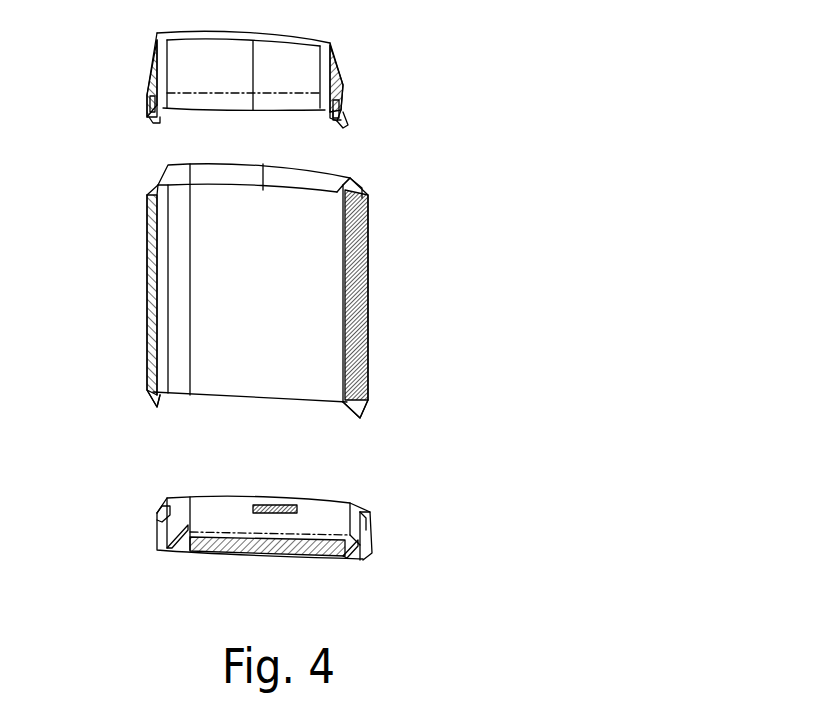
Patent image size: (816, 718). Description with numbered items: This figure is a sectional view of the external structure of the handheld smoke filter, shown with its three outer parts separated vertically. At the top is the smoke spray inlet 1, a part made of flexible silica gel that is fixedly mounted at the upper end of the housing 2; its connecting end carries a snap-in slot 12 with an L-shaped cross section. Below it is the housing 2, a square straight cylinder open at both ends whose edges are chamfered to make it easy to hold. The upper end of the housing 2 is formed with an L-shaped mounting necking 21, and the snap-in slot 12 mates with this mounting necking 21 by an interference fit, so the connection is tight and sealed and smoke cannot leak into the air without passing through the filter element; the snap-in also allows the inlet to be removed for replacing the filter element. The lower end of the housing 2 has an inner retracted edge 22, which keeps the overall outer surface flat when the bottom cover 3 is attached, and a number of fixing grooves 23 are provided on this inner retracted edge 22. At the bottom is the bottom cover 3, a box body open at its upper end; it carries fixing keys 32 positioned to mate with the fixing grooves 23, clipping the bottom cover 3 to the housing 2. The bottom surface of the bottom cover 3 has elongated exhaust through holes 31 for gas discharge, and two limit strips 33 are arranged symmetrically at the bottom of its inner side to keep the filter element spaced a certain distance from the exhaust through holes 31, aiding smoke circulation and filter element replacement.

The smoke spray inlet 1 is at (343, 82).
The snap-in slot 12 is at (340, 117).
The housing 2 is at (365, 277).
The mounting necking 21 is at (355, 187).
The inner retracted edge 22 is at (150, 393).
The fixing grooves 23 is at (353, 418).
The bottom cover 3 is at (372, 530).
The exhaust through holes 31 is at (320, 557).
The fixing keys 32 is at (153, 515).
The limit strips 33 is at (153, 547).